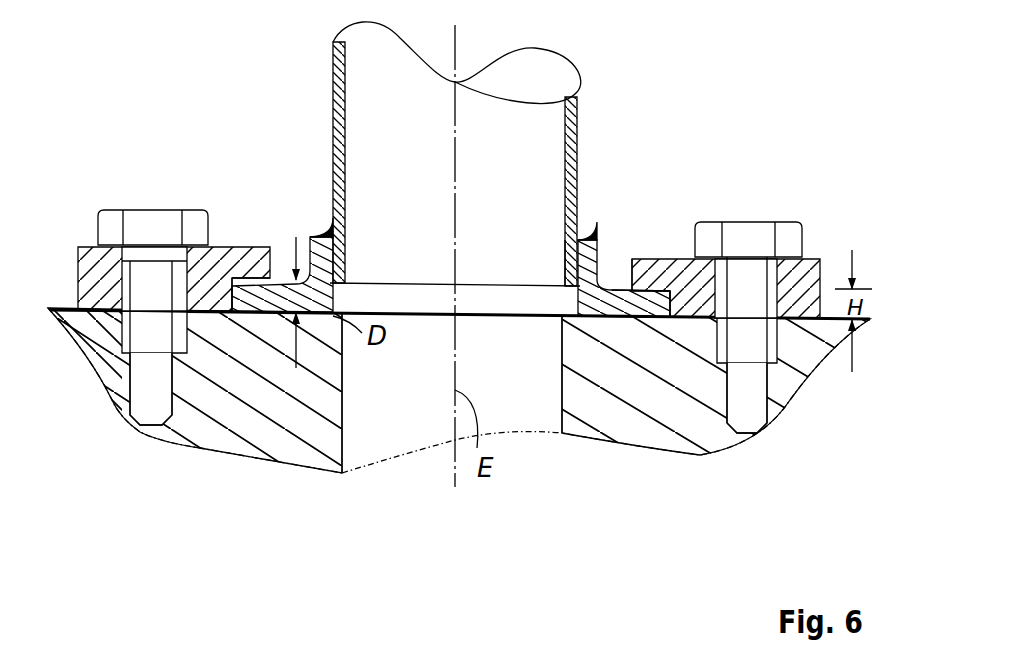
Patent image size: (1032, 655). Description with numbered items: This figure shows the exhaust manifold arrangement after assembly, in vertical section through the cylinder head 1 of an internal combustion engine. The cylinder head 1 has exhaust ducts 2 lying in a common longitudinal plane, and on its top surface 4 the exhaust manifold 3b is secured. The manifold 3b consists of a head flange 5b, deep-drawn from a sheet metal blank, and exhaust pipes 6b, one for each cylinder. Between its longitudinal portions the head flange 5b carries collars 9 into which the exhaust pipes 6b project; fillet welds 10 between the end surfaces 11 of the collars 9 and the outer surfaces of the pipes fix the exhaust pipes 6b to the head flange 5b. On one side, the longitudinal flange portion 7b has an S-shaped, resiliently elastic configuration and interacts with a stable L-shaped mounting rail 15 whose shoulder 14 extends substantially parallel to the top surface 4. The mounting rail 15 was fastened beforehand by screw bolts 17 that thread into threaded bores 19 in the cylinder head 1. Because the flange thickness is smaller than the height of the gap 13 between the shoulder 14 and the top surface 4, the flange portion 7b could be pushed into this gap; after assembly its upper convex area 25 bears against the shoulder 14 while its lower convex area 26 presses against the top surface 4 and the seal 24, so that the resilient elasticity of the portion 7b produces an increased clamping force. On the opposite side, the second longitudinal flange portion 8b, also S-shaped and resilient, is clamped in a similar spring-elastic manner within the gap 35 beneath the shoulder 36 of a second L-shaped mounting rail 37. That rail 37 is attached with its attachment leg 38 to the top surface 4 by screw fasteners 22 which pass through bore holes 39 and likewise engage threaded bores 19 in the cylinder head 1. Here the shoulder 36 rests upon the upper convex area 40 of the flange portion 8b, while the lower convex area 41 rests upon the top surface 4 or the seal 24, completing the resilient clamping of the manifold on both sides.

The cylinder head 1 is at (226, 416).
The exhaust ducts 2 is at (383, 438).
The exhaust manifold 3b is at (649, 114).
The top surface 4 is at (482, 307).
The head flange 5b is at (606, 243).
The exhaust pipes 6b is at (580, 90).
The longitudinal flange portion 7b is at (292, 282).
The second longitudinal flange portion 8b is at (600, 292).
The collars 9 is at (328, 234).
The fillet welds 10 is at (580, 234).
The end surfaces 11 is at (565, 258).
The gap 13 is at (207, 395).
The shoulder 14 is at (262, 262).
The mounting rail 15 is at (84, 245).
The screw bolts 17 is at (133, 218).
The threaded bores 19 is at (152, 378).
The screw fasteners 22 is at (767, 230).
The seal 24 is at (420, 317).
The upper convex area 25 is at (252, 268).
The lower convex area 26 is at (272, 318).
The gap 35 is at (668, 319).
The shoulder 36 is at (640, 298).
The mounting rail 37 is at (815, 261).
The attachment leg 38 is at (805, 325).
The bore holes 39 is at (757, 322).
The upper convex area 40 is at (654, 282).
The lower convex area 41 is at (606, 322).